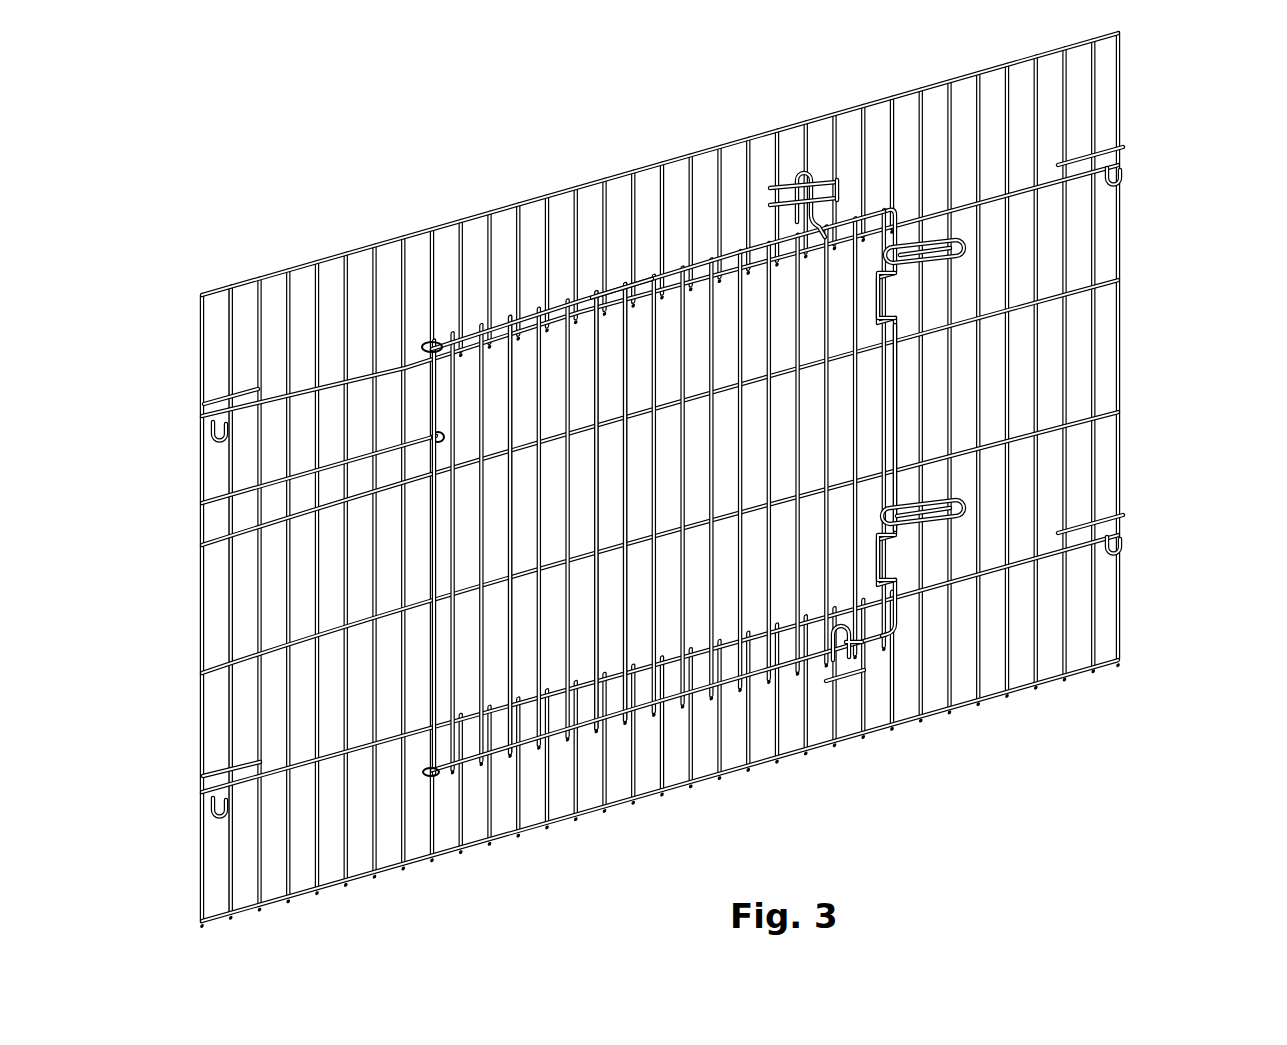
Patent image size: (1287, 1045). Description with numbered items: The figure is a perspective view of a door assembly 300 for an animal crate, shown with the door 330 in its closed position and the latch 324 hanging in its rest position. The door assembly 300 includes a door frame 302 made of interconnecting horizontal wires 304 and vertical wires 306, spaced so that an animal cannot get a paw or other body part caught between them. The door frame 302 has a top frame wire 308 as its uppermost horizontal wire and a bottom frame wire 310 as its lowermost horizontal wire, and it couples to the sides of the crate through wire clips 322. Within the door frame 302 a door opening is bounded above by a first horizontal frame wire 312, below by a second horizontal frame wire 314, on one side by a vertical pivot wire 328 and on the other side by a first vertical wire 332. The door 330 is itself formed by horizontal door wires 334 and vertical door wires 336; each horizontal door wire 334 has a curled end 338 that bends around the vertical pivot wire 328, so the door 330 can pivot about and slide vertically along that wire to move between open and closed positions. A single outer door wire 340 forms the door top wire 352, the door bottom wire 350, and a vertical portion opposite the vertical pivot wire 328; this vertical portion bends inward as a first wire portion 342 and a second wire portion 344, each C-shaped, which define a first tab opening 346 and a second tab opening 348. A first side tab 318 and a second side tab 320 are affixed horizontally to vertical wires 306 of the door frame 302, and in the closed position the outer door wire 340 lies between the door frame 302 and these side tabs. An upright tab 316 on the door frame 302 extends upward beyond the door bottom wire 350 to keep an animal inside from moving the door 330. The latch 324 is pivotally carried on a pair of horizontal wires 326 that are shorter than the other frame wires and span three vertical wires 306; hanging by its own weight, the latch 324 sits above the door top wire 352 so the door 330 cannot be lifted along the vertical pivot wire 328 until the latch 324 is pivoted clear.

The door assembly 300 is at (346, 157).
The door frame 302 is at (256, 308).
The horizontal wires 304 is at (210, 500).
The vertical wires 306 is at (236, 594).
The top frame wire 308 is at (653, 165).
The bottom frame wire 310 is at (445, 855).
The first horizontal frame wire 312 is at (497, 322).
The second horizontal frame wire 314 is at (512, 732).
The upright tab 316 is at (845, 645).
The first side tab 318 is at (937, 245).
The second side tab 320 is at (888, 558).
The wire clips 322 is at (205, 404).
The latch 324 is at (770, 186).
The pair of horizontal wires 326 is at (802, 172).
The vertical pivot wire 328 is at (432, 664).
The door 330 is at (556, 302).
The first vertical wire 332 is at (905, 372).
The horizontal door wires 334 is at (600, 660).
The vertical door wires 336 is at (627, 633).
The curled end 338 is at (426, 342).
The outer door wire 340 is at (905, 412).
The first wire portion 342 is at (840, 212).
The second wire portion 344 is at (858, 668).
The first tab opening 346 is at (888, 298).
The second tab opening 348 is at (960, 515).
The door bottom wire 350 is at (735, 692).
The door top wire 352 is at (616, 290).